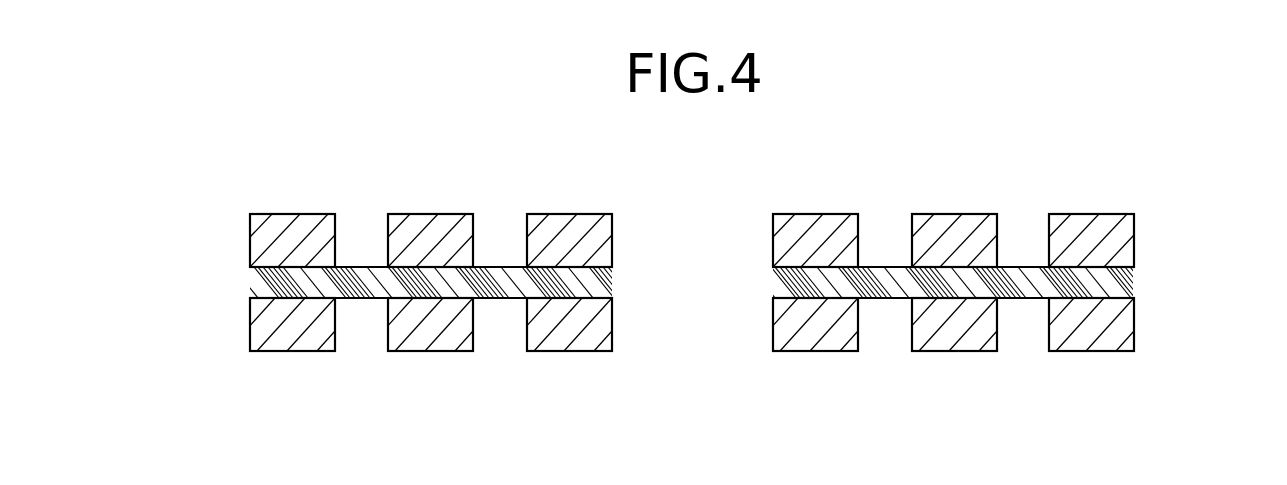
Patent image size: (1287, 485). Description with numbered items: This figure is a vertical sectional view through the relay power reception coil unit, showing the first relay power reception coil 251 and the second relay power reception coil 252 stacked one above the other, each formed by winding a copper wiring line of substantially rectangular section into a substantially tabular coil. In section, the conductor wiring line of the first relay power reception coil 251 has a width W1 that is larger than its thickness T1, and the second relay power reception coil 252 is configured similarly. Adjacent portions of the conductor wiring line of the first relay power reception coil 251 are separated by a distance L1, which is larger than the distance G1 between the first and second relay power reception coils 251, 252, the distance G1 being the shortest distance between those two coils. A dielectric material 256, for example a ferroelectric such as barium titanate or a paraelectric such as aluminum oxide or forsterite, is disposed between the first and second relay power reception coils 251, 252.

The first relay power reception coil 251 is at (568, 351).
The second relay power reception coil 252 is at (568, 214).
The dielectric material 256 is at (612, 283).
The distance between the first and second relay power reception coils G1 is at (202, 267).
The width W1 is at (250, 415).
The distance between portions of the conductor wiring line L1 is at (388, 415).
The thickness T1 is at (612, 351).